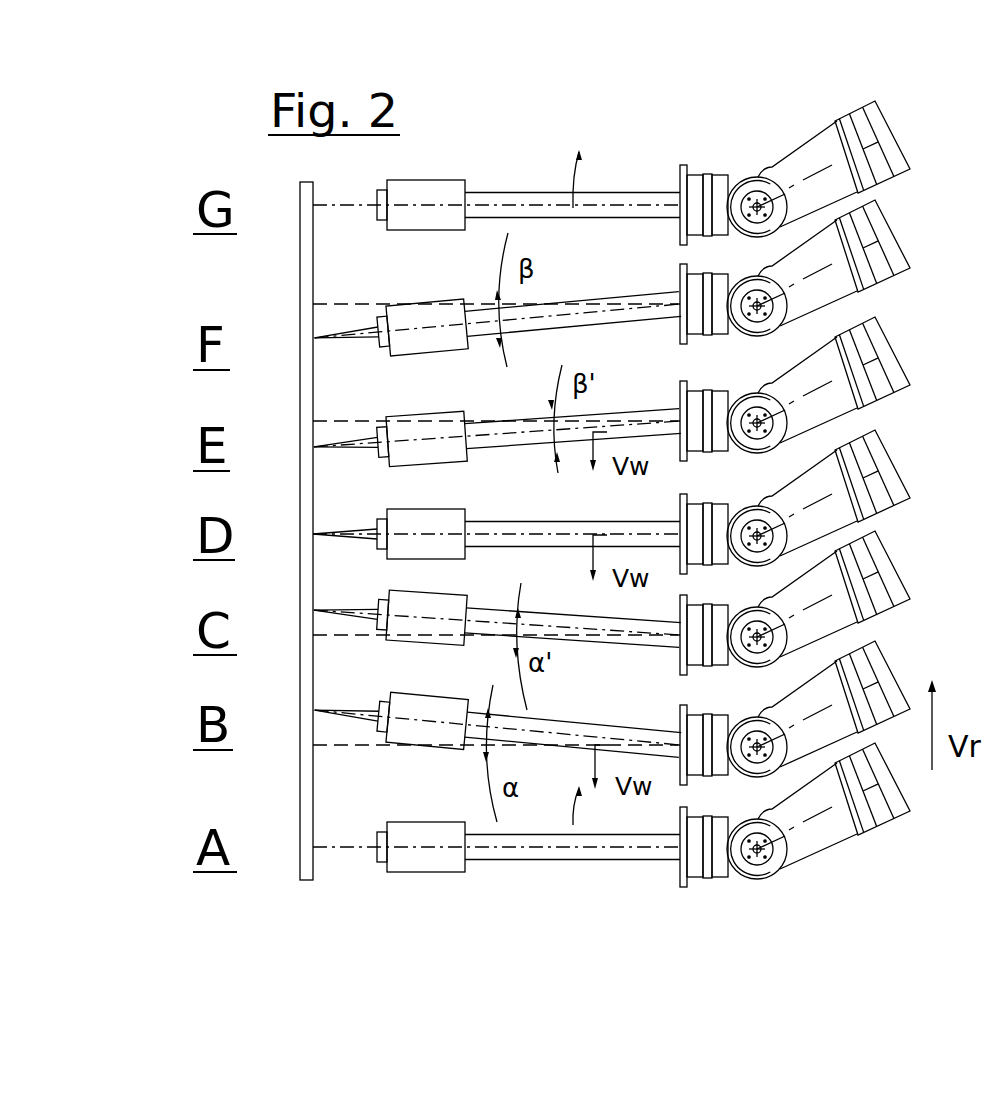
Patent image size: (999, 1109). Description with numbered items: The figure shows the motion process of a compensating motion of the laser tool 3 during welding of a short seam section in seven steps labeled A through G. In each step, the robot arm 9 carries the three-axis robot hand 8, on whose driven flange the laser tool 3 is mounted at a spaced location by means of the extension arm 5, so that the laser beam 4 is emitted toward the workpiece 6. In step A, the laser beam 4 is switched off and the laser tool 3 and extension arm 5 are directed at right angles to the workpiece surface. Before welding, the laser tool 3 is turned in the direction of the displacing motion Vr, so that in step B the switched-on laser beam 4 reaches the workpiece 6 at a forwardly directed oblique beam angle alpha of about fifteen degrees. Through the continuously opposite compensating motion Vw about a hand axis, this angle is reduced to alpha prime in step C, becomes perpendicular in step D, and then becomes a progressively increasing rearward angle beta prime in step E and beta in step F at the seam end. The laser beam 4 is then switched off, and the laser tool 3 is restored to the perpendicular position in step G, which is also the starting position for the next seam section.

The laser tool 3 is at (428, 217).
The laser beam 4 is at (365, 708).
The extension arm 5 is at (647, 645).
The workpiece 6 is at (313, 368).
The robot hand 8 is at (715, 867).
The robot arm 9 is at (908, 783).